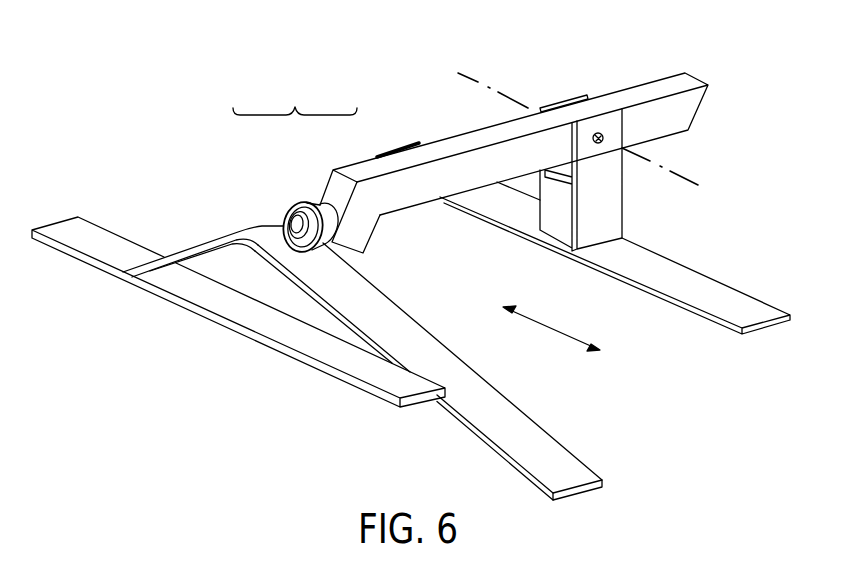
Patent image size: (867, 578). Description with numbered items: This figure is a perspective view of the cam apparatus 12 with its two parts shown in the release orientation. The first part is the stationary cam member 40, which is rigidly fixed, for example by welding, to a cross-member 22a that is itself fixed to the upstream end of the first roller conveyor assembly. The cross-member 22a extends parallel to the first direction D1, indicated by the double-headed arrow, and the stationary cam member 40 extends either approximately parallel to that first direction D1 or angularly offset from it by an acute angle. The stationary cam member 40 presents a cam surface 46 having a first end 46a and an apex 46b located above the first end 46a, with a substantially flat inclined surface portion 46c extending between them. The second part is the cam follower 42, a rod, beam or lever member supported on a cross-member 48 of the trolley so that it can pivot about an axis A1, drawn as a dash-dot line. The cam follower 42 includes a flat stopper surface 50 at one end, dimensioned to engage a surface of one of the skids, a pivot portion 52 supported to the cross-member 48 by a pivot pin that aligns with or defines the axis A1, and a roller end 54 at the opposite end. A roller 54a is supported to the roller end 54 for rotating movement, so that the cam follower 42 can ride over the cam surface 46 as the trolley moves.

The cam apparatus 12 is at (295, 98).
The cross-member 22a is at (92, 243).
The stationary cam member 40 is at (262, 228).
The cam follower 42 is at (388, 165).
The cam surface 46 is at (386, 363).
The first end 46a is at (567, 478).
The apex 46b is at (268, 236).
The inclined surface portion 46c is at (390, 325).
The cross-member 48 is at (725, 300).
The stopper surface 50 is at (702, 110).
The pivot portion 52 is at (582, 110).
The roller end 54 is at (357, 230).
The roller 54a is at (316, 217).
The axis A1 is at (474, 82).
The first direction D1 is at (550, 327).